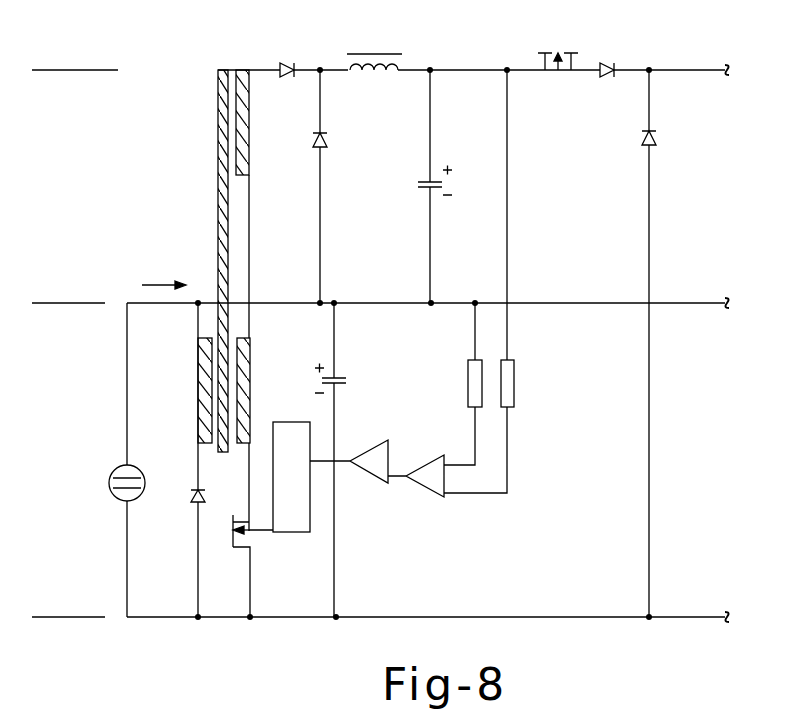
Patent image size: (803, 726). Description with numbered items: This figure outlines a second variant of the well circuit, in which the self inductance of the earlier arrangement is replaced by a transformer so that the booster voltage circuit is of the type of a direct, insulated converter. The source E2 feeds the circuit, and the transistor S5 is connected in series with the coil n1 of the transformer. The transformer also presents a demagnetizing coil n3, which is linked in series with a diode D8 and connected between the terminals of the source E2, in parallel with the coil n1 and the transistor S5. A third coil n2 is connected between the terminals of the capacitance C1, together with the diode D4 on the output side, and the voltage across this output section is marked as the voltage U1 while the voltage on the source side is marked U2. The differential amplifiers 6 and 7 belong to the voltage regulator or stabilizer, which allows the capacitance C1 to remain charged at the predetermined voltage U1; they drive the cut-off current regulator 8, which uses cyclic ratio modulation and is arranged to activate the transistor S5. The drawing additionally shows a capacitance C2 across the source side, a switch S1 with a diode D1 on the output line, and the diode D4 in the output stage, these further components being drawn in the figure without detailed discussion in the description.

The predetermined voltage U1 is at (58, 80).
The voltage U2 is at (58, 313).
The coil n1 is at (251, 420).
The third coil n2 is at (249, 158).
The demagnetizing coil n3 is at (197, 423).
The diode D1 is at (669, 144).
The diode D4 is at (341, 144).
The diode D8 is at (180, 499).
The capacitance C1 is at (422, 183).
The capacitor C2 is at (348, 383).
The switch S1 is at (558, 43).
The transistor S5 is at (240, 566).
The source E2 is at (111, 486).
The differential amplifier 6 is at (421, 487).
The differential amplifier 7 is at (370, 478).
The cut-off current regulator 8 is at (290, 534).